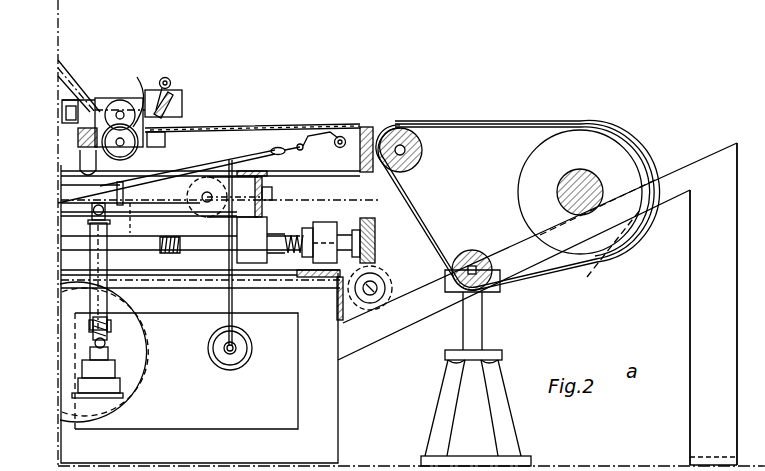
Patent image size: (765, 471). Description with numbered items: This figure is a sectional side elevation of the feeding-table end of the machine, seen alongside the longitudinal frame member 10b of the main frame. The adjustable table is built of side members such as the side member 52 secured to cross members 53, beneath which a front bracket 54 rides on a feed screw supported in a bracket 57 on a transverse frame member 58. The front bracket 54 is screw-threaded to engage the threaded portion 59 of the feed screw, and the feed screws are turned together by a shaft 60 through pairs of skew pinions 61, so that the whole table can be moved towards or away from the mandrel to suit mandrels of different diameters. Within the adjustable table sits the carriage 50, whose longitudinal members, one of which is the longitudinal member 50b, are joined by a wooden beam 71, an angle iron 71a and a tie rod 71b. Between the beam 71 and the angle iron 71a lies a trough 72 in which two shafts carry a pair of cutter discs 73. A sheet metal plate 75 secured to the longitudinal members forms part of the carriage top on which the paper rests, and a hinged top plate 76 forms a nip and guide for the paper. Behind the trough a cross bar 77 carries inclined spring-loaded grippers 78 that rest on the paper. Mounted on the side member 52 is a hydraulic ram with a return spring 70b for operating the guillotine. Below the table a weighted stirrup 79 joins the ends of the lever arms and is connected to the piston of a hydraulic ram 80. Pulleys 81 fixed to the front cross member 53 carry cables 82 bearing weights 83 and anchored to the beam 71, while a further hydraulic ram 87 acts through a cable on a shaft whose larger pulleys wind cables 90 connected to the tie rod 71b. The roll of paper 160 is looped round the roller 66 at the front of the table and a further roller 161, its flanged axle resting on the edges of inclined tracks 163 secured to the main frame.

The longitudinal frame member 10b is at (220, 423).
The carriage 50 is at (298, 119).
The longitudinal member 50b is at (259, 140).
The side member 52 is at (365, 178).
The cross member 53 is at (275, 202).
The front bracket 54 is at (272, 227).
The bracket 57 is at (332, 222).
The transverse frame member 58 is at (325, 281).
The threaded portion 59 is at (186, 257).
The shaft 60 is at (384, 299).
The skew pinion 61 is at (390, 246).
The roller 66 is at (430, 142).
The return spring 70b is at (66, 55).
The wooden beam 71 is at (74, 148).
The angle iron 71a is at (171, 141).
The tie rod 71b is at (343, 132).
The trough 72 is at (144, 159).
The cutter disc 73 is at (140, 94).
The sheet metal plate 75 is at (225, 123).
The top plate 76 is at (76, 111).
The cross bar 77 is at (169, 75).
The spring loaded gripper 78 is at (176, 104).
The stirrup 79 is at (88, 271).
The hydraulic ram 80 is at (120, 268).
The pulley 81 is at (195, 222).
The cable 82 is at (239, 296).
The weight 83 is at (263, 348).
The hydraulic ram 87 is at (153, 202).
The cable 90 is at (75, 208).
The roll of paper 160 is at (586, 203).
The roller 161 is at (495, 254).
The inclined track 163 is at (670, 204).